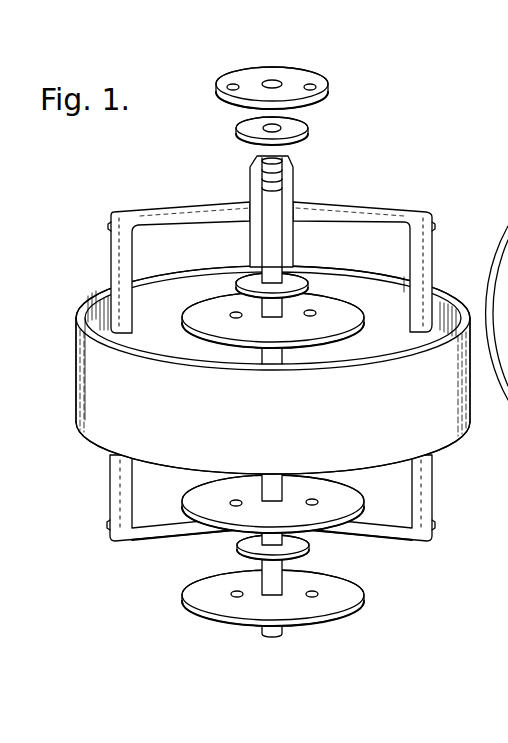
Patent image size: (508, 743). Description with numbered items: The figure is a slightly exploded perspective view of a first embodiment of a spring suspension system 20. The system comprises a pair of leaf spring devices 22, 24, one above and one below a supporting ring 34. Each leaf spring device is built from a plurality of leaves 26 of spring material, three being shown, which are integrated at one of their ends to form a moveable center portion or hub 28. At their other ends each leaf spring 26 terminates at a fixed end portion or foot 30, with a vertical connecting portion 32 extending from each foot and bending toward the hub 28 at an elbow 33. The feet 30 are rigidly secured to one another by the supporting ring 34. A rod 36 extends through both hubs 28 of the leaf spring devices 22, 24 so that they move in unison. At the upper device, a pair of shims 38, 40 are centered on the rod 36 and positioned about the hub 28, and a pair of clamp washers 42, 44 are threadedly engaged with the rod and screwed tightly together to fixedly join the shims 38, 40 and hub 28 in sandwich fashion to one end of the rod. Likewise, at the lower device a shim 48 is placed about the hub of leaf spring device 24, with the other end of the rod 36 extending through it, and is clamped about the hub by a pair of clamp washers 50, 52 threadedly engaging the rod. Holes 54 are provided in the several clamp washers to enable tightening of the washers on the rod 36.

The spring suspension system 20 is at (411, 181).
The leaf spring device 22 is at (272, 357).
The leaf spring device 24 is at (172, 549).
The leaves 26 is at (180, 207).
The hub 28 is at (252, 200).
The foot 30 is at (258, 375).
The vertical connecting portion 32 is at (118, 252).
The elbow 33 is at (116, 212).
The supporting ring 34 is at (240, 428).
The rod 36 is at (283, 252).
The shim 38 is at (306, 130).
The shim 40 is at (238, 284).
The clamp washer 42 is at (330, 87).
The clamp washer 44 is at (357, 318).
The shim 48 is at (307, 549).
The clamp washer 50 is at (197, 505).
The clamp washer 52 is at (366, 601).
The holes 54 is at (230, 84).